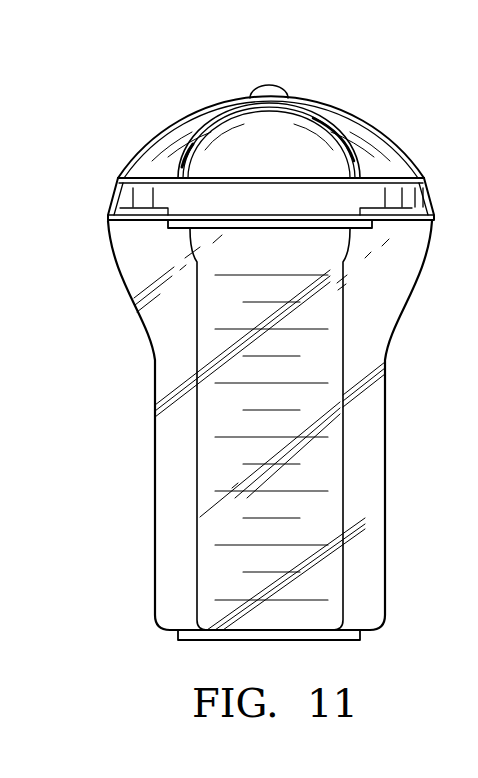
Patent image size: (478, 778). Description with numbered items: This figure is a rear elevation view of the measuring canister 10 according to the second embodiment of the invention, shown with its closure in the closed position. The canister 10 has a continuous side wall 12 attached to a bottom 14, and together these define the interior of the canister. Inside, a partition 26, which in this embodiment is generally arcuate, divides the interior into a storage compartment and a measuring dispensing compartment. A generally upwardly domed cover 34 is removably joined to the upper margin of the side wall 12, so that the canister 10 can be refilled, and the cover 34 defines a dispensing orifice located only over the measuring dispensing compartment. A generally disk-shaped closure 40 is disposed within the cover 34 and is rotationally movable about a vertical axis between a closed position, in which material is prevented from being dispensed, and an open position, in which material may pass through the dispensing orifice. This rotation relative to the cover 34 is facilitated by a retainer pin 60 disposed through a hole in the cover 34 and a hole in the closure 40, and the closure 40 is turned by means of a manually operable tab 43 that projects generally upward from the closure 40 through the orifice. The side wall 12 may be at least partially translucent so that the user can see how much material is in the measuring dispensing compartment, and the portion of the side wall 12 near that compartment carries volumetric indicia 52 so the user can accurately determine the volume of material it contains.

The measuring canister 10 is at (130, 115).
The continuous side wall 12 is at (155, 427).
The bottom 14 is at (197, 640).
The partition 26 is at (347, 317).
The cover 34 is at (343, 112).
The closure 40 is at (229, 112).
The manually operable tab 43 is at (346, 132).
The volumetric indicia 52 is at (326, 490).
The retainer pin 60 is at (272, 86).